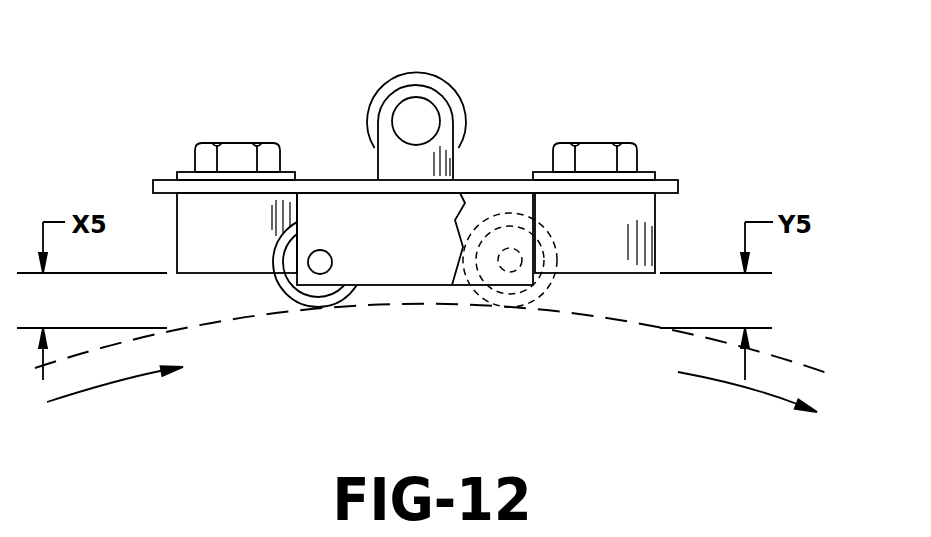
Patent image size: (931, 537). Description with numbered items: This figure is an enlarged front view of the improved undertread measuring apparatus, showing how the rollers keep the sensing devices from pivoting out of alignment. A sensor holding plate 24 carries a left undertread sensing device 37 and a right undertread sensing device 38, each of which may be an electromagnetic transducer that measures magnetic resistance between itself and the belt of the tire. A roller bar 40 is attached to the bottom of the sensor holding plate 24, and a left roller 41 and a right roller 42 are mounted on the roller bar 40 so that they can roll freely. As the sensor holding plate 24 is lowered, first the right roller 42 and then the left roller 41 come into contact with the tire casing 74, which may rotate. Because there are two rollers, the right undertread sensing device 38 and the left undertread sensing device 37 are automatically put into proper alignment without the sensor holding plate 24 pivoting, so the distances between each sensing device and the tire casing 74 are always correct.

The sensor holding plate 24 is at (500, 185).
The left undertread sensing device 37 is at (187, 213).
The right undertread sensing device 38 is at (643, 216).
The roller bar 40 is at (382, 235).
The left roller 41 is at (285, 280).
The right roller 42 is at (543, 285).
The tire casing 74 is at (826, 372).